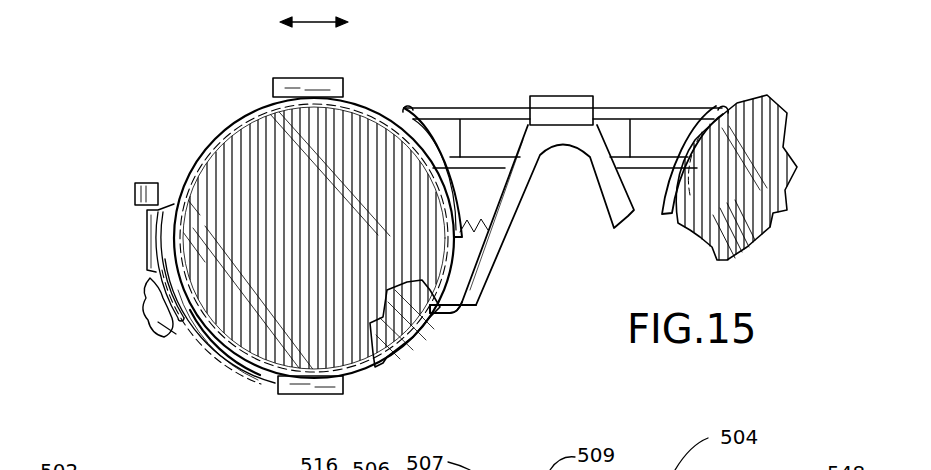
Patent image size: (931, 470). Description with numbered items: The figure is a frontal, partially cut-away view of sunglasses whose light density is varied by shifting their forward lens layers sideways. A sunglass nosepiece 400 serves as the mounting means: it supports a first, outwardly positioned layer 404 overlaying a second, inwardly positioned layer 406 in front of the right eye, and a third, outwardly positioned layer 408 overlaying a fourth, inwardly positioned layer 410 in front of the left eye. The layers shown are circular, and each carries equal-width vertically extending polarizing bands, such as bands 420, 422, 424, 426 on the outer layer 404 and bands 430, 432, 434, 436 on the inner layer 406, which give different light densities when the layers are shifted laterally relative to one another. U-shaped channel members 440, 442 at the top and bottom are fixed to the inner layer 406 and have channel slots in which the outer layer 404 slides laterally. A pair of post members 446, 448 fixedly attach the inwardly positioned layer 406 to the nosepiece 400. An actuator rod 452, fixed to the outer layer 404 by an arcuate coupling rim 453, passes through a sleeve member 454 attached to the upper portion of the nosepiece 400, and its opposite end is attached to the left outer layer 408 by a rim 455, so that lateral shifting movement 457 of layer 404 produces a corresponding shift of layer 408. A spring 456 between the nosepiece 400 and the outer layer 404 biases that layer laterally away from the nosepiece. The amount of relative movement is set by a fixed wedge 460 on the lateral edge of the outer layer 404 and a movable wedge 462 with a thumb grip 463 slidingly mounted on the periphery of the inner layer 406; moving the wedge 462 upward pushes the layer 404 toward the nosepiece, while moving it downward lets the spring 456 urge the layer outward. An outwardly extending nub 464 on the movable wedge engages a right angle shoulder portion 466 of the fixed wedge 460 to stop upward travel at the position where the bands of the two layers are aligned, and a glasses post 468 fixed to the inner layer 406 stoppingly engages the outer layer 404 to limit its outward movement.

The sunglass nosepiece 400 is at (603, 108).
The first, outwardly positioned layer 404 is at (380, 372).
The second, inwardly positioned layer 406 is at (407, 338).
The third, outwardly positioned layer 408 is at (767, 168).
The fourth, inwardly positioned layer 410 is at (757, 233).
The vertically extending band 420 is at (185, 338).
The vertically extending band 422 is at (208, 350).
The vertically extending band 424 is at (220, 368).
The vertically extending band 426 is at (235, 370).
The vertically extending band 430 is at (170, 185).
The vertically extending band 432 is at (192, 150).
The vertically extending band 434 is at (200, 142).
The vertically extending band 436 is at (227, 115).
The U-shaped channel member 440 is at (308, 79).
The U-shaped channel member 442 is at (317, 394).
The post member 446 is at (467, 108).
The post member 448 is at (447, 318).
The actuator rod 452 is at (447, 108).
The arcuate coupling rim 453 is at (414, 108).
The sleeve member 454 is at (566, 96).
The rim 455 is at (718, 100).
The spring 456 is at (483, 232).
The lateral shifting movement 457 is at (322, 24).
The fixed wedge 460 is at (165, 220).
The movable wedge 462 is at (170, 255).
The thumb grip 463 is at (157, 322).
The outwardly extending nub 464 is at (170, 283).
The right angle shoulder portion 466 is at (170, 277).
The glasses post 468 is at (133, 190).